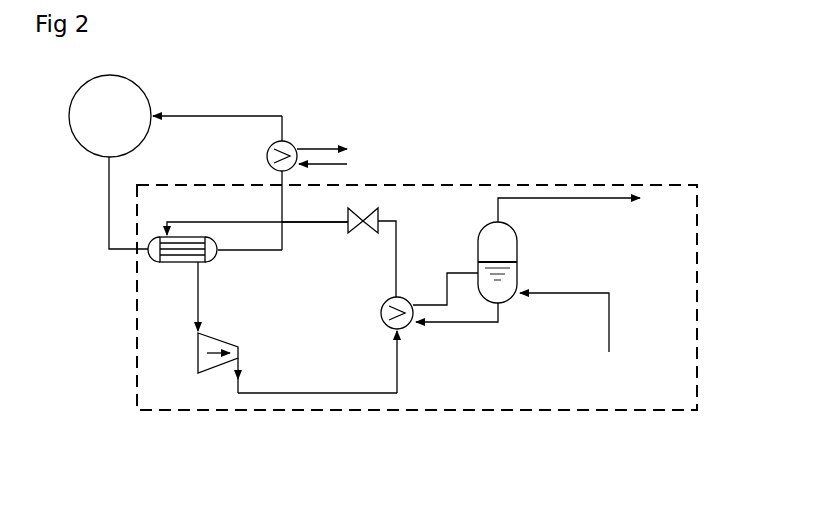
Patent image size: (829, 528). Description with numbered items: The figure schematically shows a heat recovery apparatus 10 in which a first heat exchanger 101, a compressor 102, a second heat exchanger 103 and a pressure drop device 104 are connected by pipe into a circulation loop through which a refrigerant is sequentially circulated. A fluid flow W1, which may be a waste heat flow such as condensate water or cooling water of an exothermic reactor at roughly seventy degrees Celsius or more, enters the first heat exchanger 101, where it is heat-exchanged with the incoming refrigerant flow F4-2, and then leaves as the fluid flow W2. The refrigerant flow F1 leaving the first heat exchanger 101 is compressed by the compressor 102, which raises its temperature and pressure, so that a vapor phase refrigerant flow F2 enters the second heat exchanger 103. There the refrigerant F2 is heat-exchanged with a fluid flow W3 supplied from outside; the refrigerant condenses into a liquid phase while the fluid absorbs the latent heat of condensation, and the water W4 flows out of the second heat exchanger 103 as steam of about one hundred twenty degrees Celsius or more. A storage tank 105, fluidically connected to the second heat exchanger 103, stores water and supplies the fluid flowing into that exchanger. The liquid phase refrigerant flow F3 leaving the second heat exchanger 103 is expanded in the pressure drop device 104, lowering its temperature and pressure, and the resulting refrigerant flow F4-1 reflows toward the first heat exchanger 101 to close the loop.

The heat recovery apparatus 10 is at (285, 410).
The first heat exchanger 101 is at (150, 258).
The compressor 102 is at (198, 372).
The second heat exchanger 103 is at (405, 333).
The pressure drop device 104 is at (365, 217).
The storage tank 105 is at (518, 236).
The fluid flow W1 is at (109, 200).
The fluid flow W2 is at (267, 250).
The fluid flow W3 is at (478, 325).
The water W4 is at (463, 273).
The refrigerant flow F1 is at (200, 297).
The vapor phase refrigerant flow F2 is at (317, 393).
The liquid phase refrigerant flow F3 is at (397, 258).
The refrigerant flow F4-1 is at (337, 222).
The refrigerant flow F4-2 is at (167, 222).